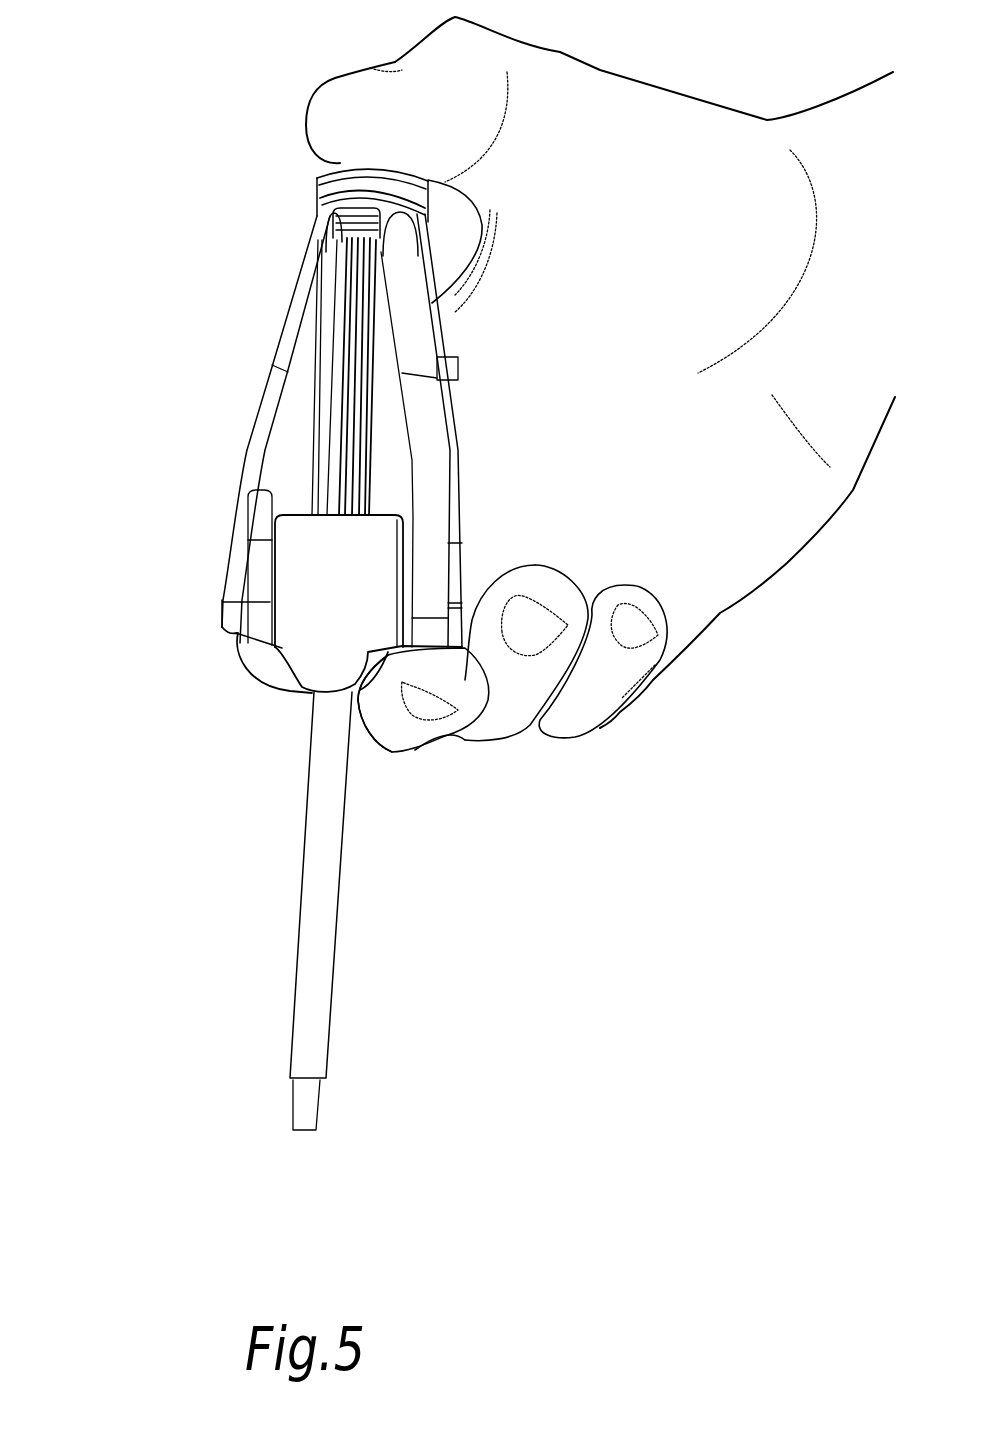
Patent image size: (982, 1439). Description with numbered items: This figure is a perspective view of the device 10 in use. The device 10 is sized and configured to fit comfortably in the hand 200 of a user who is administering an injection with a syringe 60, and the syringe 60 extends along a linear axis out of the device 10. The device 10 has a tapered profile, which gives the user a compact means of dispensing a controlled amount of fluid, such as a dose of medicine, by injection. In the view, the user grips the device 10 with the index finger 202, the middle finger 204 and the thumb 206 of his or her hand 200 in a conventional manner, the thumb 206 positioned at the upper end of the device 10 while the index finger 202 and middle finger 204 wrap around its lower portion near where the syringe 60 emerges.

The device 10 is at (175, 450).
The syringe 60 is at (300, 933).
The hand 200 is at (725, 615).
The index finger 202 is at (245, 673).
The middle finger 204 is at (412, 748).
The thumb 206 is at (315, 96).